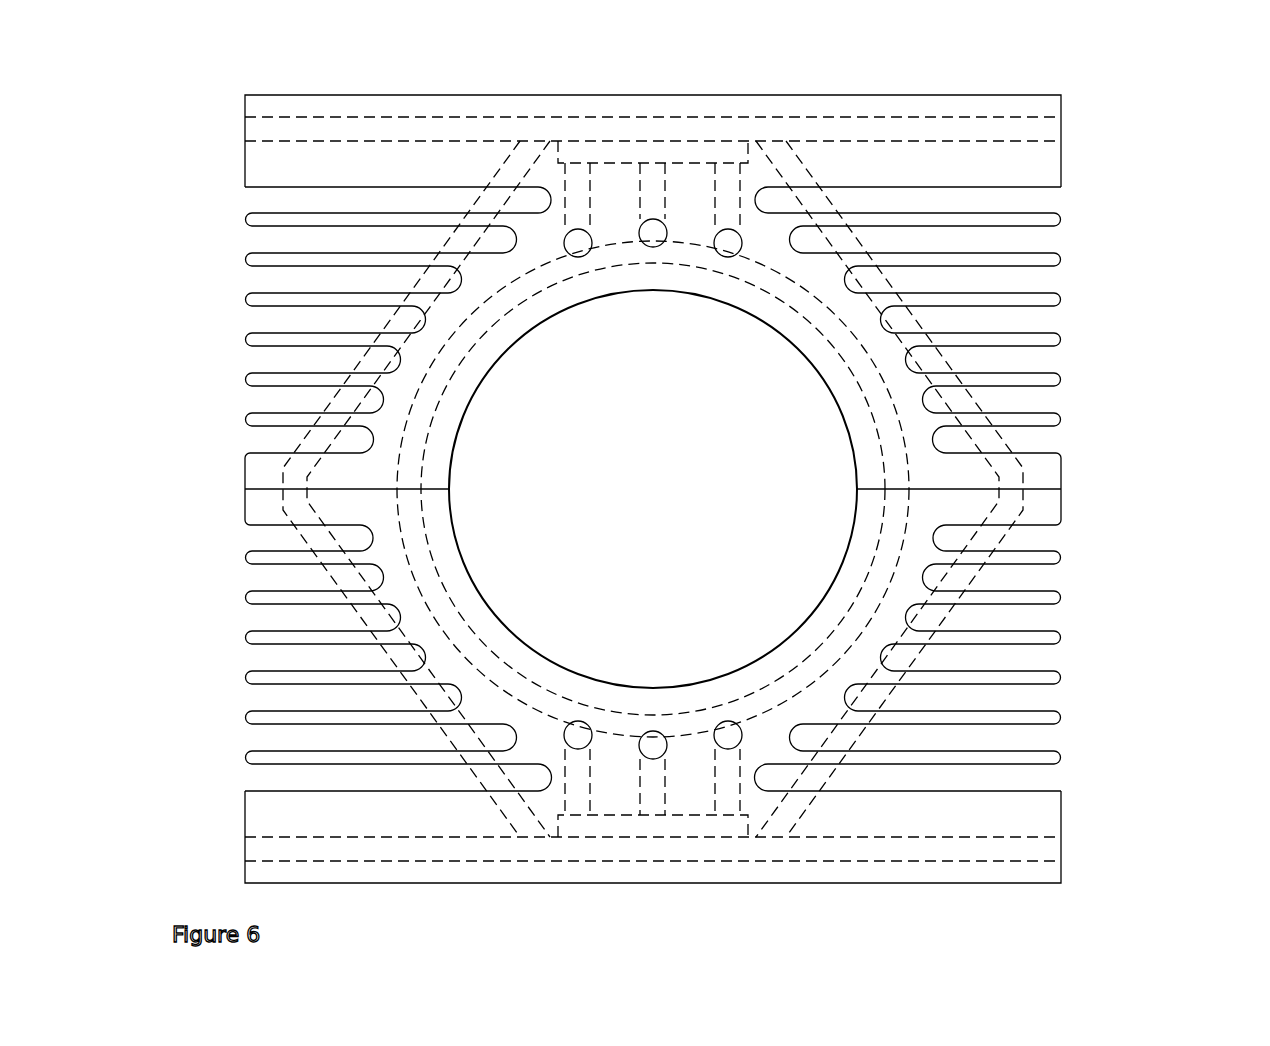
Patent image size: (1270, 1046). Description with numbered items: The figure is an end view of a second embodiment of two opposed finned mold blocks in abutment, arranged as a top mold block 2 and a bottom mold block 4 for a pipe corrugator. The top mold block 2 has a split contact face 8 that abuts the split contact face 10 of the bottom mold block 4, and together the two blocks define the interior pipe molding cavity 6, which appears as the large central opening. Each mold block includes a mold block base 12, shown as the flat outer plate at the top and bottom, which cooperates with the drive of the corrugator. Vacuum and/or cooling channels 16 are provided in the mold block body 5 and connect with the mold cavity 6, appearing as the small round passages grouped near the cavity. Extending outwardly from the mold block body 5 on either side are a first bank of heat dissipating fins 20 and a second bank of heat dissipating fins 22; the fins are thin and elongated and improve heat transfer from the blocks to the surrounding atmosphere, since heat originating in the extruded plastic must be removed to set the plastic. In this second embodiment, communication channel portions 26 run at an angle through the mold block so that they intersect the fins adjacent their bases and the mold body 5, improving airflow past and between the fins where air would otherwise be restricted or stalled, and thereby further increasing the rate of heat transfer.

The top mold block 2 is at (668, 502).
The bottom mold block 4 is at (1095, 897).
The mold block body 5 is at (776, 249).
The pipe molding cavity 6 is at (550, 585).
The split contact face 8 is at (428, 488).
The split contact face 10 is at (882, 489).
The mold block base 12 is at (638, 112).
The vacuum and/or cooling channels 16 is at (730, 735).
The first bank of heat dissipating fins 20 is at (207, 320).
The second bank of heat dissipating fins 22 is at (1110, 320).
The communication channel 26 is at (770, 835).